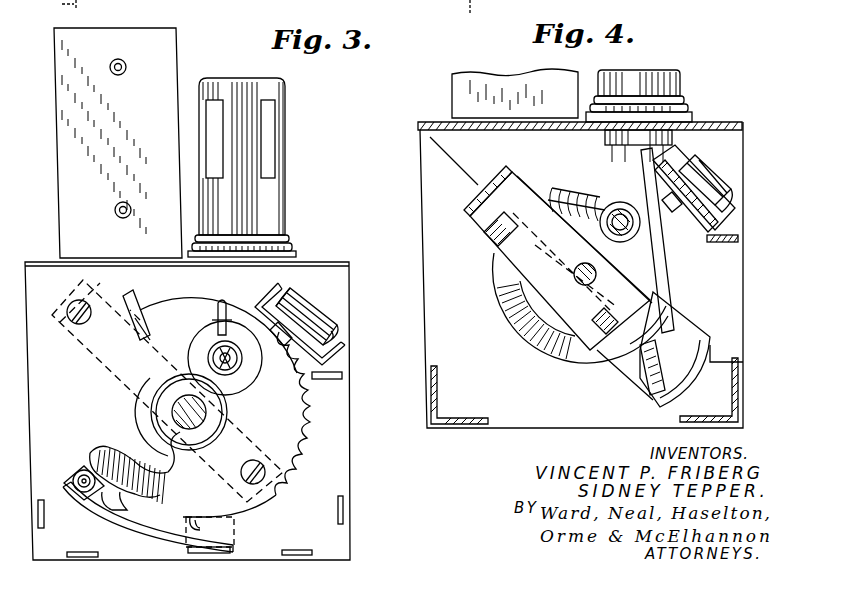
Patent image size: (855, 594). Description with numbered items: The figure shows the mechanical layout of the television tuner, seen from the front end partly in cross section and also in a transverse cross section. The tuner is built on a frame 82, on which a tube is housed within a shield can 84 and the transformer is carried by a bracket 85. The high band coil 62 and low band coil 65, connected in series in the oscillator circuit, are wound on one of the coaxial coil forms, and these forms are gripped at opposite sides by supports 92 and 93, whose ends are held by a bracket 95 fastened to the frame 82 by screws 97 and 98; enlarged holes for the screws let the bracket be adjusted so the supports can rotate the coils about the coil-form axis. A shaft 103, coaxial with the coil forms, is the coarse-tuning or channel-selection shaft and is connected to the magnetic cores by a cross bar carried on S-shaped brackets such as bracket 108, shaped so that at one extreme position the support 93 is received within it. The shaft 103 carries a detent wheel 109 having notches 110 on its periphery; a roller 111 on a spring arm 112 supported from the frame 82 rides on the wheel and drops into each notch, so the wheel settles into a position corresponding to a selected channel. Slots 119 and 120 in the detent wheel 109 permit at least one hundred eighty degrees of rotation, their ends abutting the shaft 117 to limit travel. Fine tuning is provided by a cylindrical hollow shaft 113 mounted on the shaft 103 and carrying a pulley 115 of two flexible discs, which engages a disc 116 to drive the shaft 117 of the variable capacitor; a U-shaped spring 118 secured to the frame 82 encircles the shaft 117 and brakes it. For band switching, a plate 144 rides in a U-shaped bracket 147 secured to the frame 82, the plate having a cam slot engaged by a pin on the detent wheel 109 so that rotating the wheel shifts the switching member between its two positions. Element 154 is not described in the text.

In FIG. 4, the high band coil 62 is at (672, 258).
In FIG. 4, the low band coil 65 is at (578, 192).
In FIG. 4, the frame 82 is at (422, 254).
In FIG. 3, the shield can 84 is at (286, 188).
In FIG. 4, the shield can 84 is at (682, 80).
In FIG. 3, the bracket 85 is at (60, 158).
In FIG. 4, the bracket 85 is at (452, 92).
In FIG. 4, the support 92 is at (492, 238).
In FIG. 4, the support 93 is at (612, 316).
In FIG. 4, the bracket 95 is at (512, 172).
In FIG. 3, the screw 97 is at (72, 300).
In FIG. 3, the screw 98 is at (262, 505).
In FIG. 3, the shaft 103 is at (195, 430).
In FIG. 4, the shaft 103 is at (584, 286).
In FIG. 4, the S-shaped bracket 108 is at (688, 330).
In FIG. 3, the detent wheel 109 is at (306, 410).
In FIG. 4, the detent wheel 109 is at (580, 308).
In FIG. 3, the notches 110 is at (210, 535).
In FIG. 3, the roller 111 is at (78, 468).
In FIG. 3, the spring arm 112 is at (94, 522).
In FIG. 3, the cylindrical hollow shaft 113 is at (212, 428).
In FIG. 3, the pulley 115 is at (225, 404).
In FIG. 3, the disc 116 is at (248, 378).
In FIG. 3, the shaft 117 is at (238, 362).
In FIG. 4, the shaft 117 is at (614, 202).
In FIG. 3, the U-shaped spring 118 is at (224, 298).
In FIG. 3, the slot 119 is at (152, 485).
In FIG. 3, the slot 120 is at (175, 335).
In FIG. 3, the plate 144 is at (318, 380).
In FIG. 3, the U-shaped bracket 147 is at (345, 345).
In FIG. 3, the tab 154 is at (132, 294).